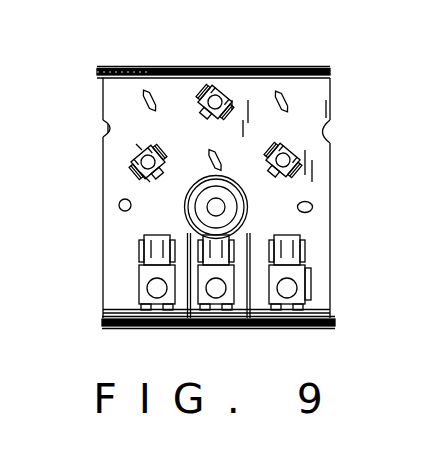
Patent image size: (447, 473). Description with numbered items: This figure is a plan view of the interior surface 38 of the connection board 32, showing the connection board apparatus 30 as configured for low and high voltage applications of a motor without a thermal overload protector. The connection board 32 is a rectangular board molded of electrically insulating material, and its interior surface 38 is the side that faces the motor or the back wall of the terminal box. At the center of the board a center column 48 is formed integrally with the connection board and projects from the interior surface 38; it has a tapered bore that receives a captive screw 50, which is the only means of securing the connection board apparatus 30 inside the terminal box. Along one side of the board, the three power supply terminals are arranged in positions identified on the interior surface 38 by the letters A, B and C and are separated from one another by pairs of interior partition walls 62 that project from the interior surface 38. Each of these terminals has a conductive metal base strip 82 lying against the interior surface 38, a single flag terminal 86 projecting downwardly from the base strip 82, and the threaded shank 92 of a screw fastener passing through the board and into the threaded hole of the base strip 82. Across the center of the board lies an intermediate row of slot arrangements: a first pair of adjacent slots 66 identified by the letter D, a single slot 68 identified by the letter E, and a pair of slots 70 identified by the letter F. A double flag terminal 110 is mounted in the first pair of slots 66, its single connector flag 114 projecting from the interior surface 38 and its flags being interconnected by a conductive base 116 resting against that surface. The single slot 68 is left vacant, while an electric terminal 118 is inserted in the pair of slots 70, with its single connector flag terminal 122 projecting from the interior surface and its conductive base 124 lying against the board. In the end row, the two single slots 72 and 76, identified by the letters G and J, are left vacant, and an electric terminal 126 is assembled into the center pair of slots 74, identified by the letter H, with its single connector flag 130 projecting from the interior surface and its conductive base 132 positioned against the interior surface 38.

The connection board apparatus 30 is at (327, 48).
The connection board 32 is at (112, 199).
The interior surface 38 is at (120, 224).
The center column 48 is at (240, 217).
The screw 50 is at (226, 207).
The interior partition walls 62 is at (188, 305).
The first pair of adjacent slots 66 is at (303, 166).
The single slot 68 is at (205, 173).
The pair of slots 70 is at (124, 160).
The single slot 72 is at (288, 90).
The pair of slots 74 is at (203, 88).
The single slot 76 is at (123, 82).
The conductive metal base strip 82 is at (142, 271).
The single flag terminal 86 is at (166, 297).
The threaded shank 92 is at (140, 296).
The double flag terminal 110 is at (302, 150).
The single connector flag 114 is at (295, 180).
The conductive base 116 is at (322, 118).
The electric terminal 118 is at (133, 172).
The single connector flag terminal 122 is at (140, 148).
The conductive base 124 is at (112, 132).
The electric terminal 126 is at (222, 83).
The single connector flag 130 is at (240, 88).
The conductive base 132 is at (163, 84).